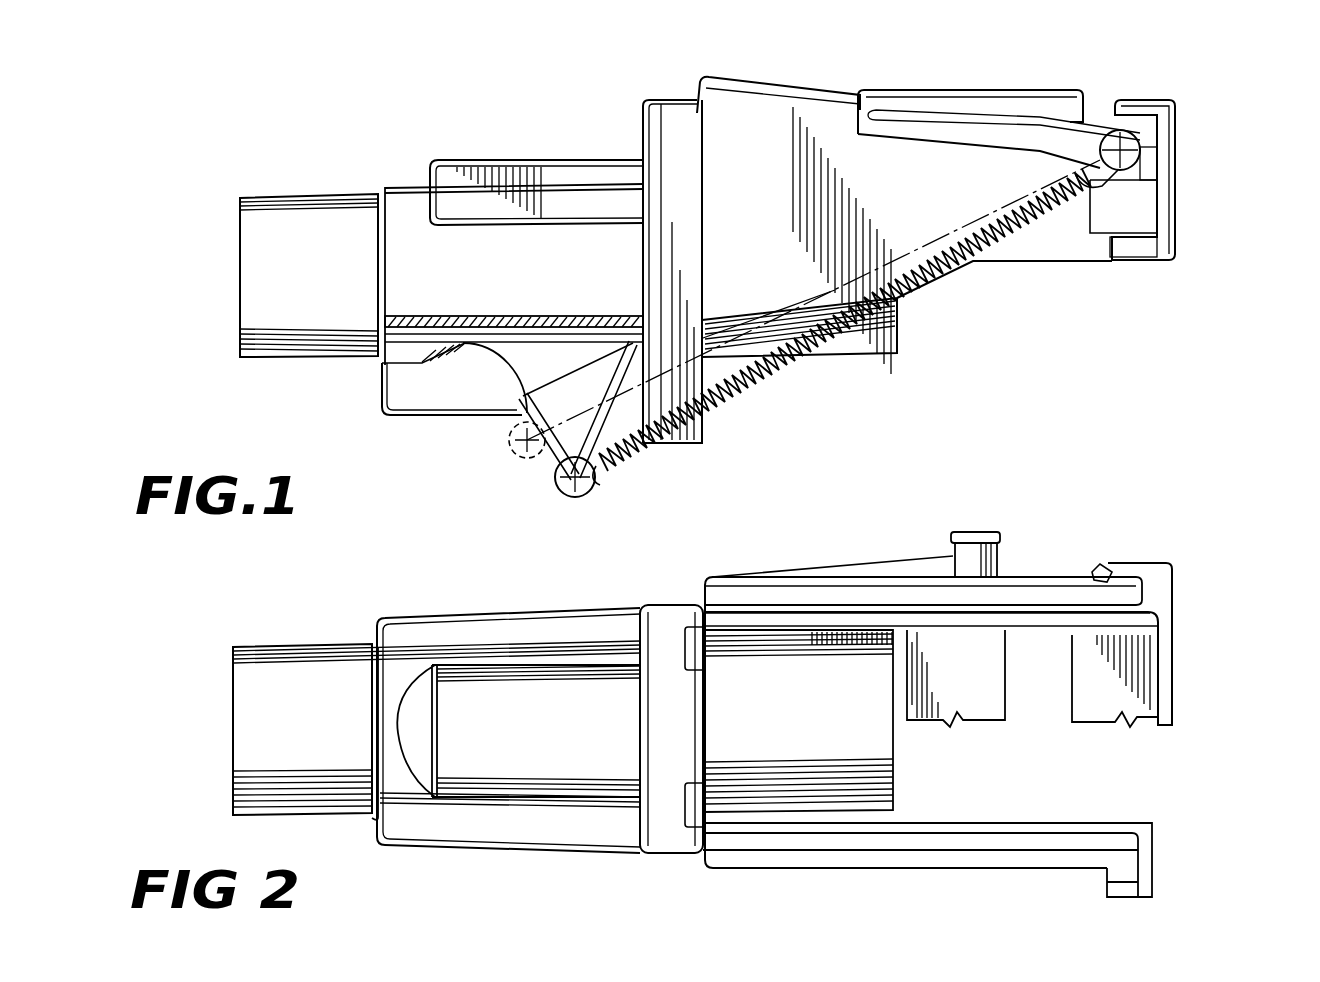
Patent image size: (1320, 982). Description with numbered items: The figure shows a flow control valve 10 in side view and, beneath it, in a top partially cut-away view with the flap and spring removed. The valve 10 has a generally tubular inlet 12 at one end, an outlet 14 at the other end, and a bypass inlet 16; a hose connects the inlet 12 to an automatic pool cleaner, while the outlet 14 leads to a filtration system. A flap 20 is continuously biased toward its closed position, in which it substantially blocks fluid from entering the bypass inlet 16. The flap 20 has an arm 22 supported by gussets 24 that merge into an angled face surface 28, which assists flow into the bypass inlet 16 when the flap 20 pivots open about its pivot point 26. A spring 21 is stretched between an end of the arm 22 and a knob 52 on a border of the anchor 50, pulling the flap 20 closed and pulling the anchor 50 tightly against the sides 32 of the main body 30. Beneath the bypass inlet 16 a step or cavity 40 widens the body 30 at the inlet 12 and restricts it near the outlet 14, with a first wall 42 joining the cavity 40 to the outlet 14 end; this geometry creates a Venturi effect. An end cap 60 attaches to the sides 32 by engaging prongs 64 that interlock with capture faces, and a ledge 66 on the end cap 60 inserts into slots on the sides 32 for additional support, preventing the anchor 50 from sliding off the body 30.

In FIG. 1, the valve 10 is at (330, 62).
In FIG. 1, the inlet 12 is at (900, 312).
In FIG. 2, the inlet 12 is at (895, 750).
In FIG. 1, the outlet 14 is at (240, 330).
In FIG. 2, the outlet 14 is at (235, 690).
In FIG. 2, the bypass inlet 16 is at (548, 772).
In FIG. 1, the flap 20 is at (500, 428).
In FIG. 1, the spring 21 is at (752, 392).
In FIG. 1, the arm 22 is at (572, 497).
In FIG. 1, the gussets 24 is at (548, 462).
In FIG. 1, the pivot point 26 is at (622, 330).
In FIG. 1, the face surface 28 is at (482, 366).
In FIG. 1, the main body 30 is at (673, 97).
In FIG. 1, the sides 32 is at (720, 160).
In FIG. 1, the cavity 40 is at (548, 170).
In FIG. 2, the cavity 40 is at (560, 750).
In FIG. 1, the first wall 42 is at (430, 160).
In FIG. 2, the first wall 42 is at (437, 713).
In FIG. 1, the anchor 50 is at (968, 92).
In FIG. 2, the anchor 50 is at (982, 677).
In FIG. 2, the knob 52 is at (968, 530).
In FIG. 1, the end cap 60 is at (1152, 100).
In FIG. 2, the end cap 60 is at (1172, 598).
In FIG. 1, the engaging prongs 64 is at (1130, 205).
In FIG. 2, the engaging prongs 64 is at (1106, 576).
In FIG. 2, the ledge 66 is at (1100, 722).